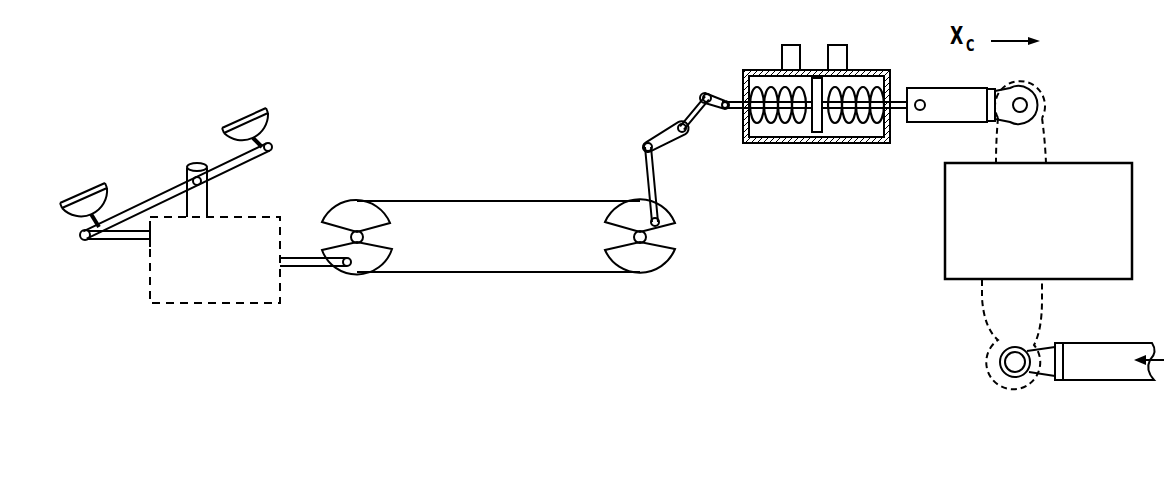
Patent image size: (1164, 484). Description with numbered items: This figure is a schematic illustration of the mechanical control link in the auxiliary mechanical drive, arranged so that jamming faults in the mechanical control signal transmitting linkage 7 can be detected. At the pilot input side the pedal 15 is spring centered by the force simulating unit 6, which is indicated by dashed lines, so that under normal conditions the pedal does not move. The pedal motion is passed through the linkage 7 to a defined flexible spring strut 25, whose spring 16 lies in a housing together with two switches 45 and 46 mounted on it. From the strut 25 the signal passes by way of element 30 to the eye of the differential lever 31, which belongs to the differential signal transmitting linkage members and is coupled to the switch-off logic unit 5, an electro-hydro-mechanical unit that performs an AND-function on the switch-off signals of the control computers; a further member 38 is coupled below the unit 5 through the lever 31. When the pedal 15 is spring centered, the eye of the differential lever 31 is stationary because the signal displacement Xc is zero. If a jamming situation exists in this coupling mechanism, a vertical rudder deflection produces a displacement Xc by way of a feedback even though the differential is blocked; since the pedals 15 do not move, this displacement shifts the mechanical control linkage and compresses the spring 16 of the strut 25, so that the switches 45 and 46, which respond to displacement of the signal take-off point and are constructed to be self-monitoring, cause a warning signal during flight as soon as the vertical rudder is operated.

The switch-off logic unit 5 is at (1046, 232).
The force simulating unit 6 is at (282, 293).
The mechanical control signal transmitting linkage 7 is at (650, 135).
The pedal 15 is at (158, 200).
The spring 16 is at (781, 122).
The flexible spring strut 25 is at (867, 78).
The cylinder with eye coupling 30 is at (930, 115).
The differential lever 31 is at (1034, 142).
The actuating cylinder 38 is at (1110, 370).
The switch 45 is at (792, 78).
The switch 46 is at (836, 78).